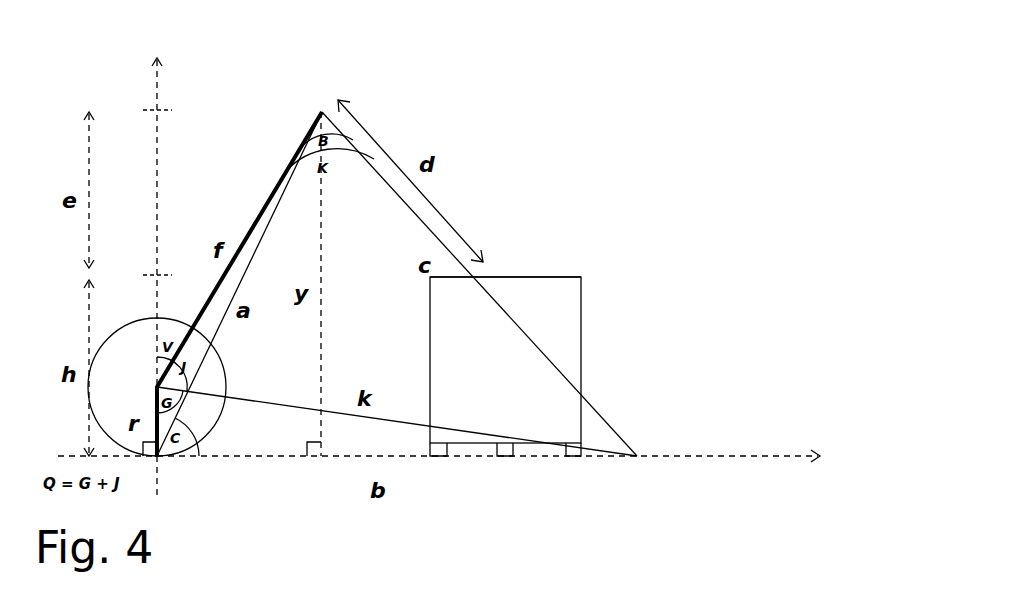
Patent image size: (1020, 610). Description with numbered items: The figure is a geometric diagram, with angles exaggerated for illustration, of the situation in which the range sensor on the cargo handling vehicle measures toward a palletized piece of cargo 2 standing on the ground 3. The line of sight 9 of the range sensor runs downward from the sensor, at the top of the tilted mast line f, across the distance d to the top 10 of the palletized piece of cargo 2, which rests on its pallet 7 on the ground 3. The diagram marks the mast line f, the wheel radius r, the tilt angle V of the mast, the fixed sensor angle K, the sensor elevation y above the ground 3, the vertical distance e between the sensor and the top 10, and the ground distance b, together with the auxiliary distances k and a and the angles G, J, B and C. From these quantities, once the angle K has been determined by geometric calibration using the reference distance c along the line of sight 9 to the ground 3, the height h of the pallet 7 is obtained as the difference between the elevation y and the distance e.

The palletized piece of cargo 2 is at (537, 252).
The ground 3 is at (252, 458).
The pallet 7 is at (507, 450).
The line of sight 9 is at (384, 176).
The top of the palletized piece of cargo 10 is at (567, 278).